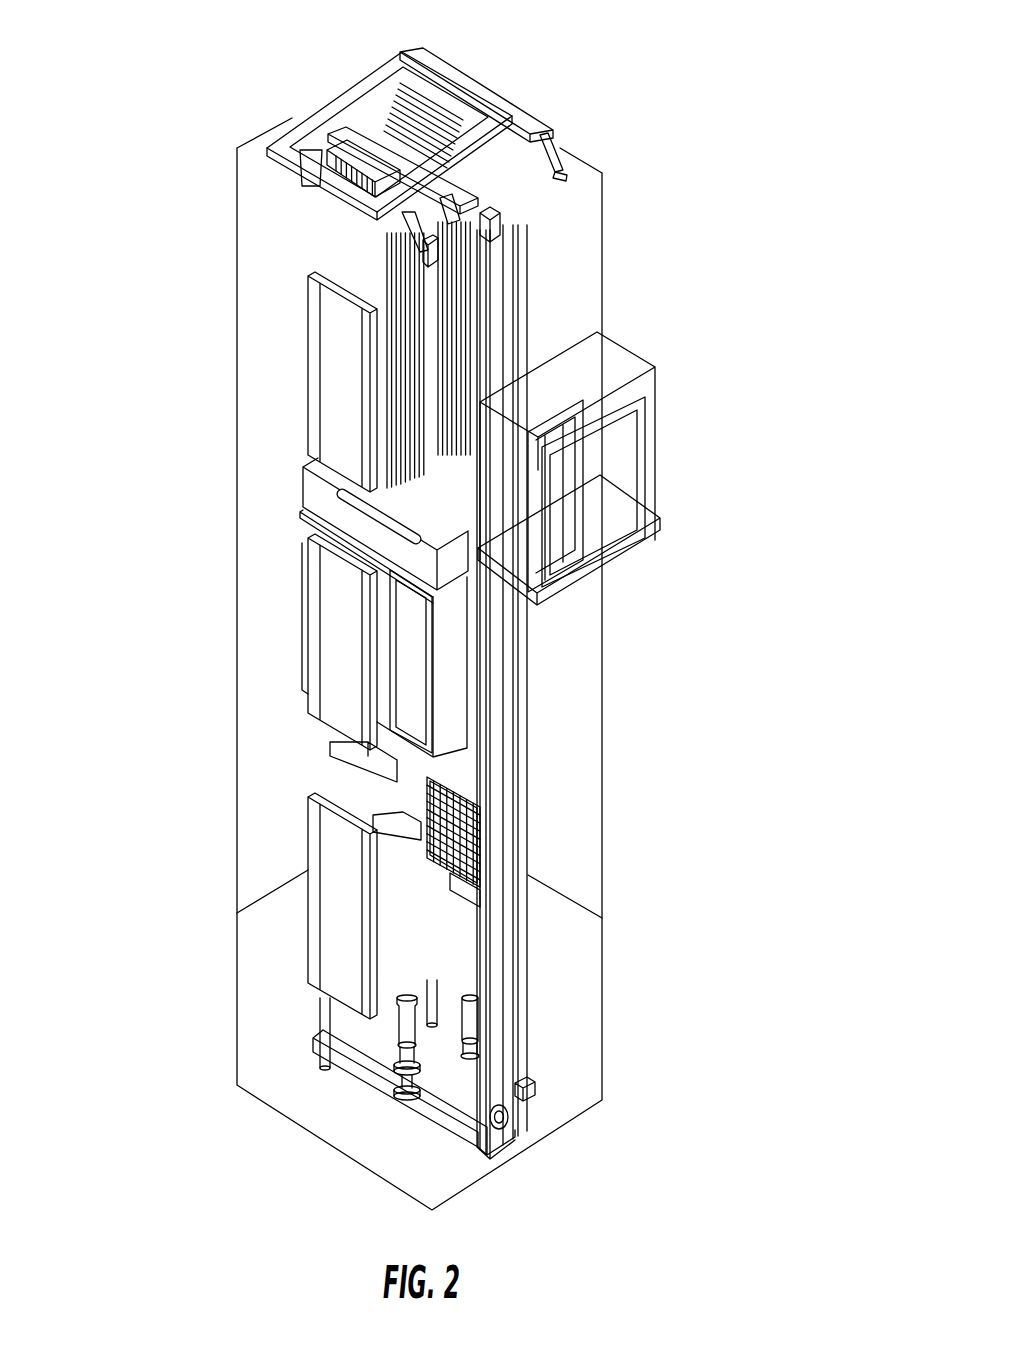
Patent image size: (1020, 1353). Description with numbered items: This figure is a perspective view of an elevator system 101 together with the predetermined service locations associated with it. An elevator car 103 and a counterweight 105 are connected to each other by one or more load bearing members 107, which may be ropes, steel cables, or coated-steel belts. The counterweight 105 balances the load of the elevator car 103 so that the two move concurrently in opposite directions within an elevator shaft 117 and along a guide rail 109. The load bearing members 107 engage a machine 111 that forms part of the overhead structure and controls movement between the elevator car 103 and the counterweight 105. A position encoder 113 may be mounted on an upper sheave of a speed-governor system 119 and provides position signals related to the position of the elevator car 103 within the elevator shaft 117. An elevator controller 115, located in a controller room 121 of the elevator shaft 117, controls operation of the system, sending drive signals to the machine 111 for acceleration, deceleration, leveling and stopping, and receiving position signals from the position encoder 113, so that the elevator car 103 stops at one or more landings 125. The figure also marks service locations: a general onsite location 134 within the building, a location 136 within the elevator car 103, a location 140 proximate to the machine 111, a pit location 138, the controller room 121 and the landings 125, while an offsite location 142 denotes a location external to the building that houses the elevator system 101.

The elevator system 101 is at (662, 92).
The elevator car 103 is at (497, 649).
The counterweight 105 is at (452, 845).
The load bearing members 107 is at (430, 380).
The guide rail 109 is at (497, 767).
The machine 111 is at (336, 140).
The position encoder 113 is at (490, 232).
The elevator controller 115 is at (598, 477).
The elevator shaft 117 is at (284, 766).
The speed-governor system 119 is at (530, 263).
The controller room 121 is at (662, 364).
The landings 125 is at (307, 370).
The onsite location 134 is at (625, 975).
The location within elevator car 136 is at (435, 652).
The pit location 138 is at (470, 1082).
The location proximate to machine 140 is at (462, 62).
The offsite location 142 is at (105, 790).